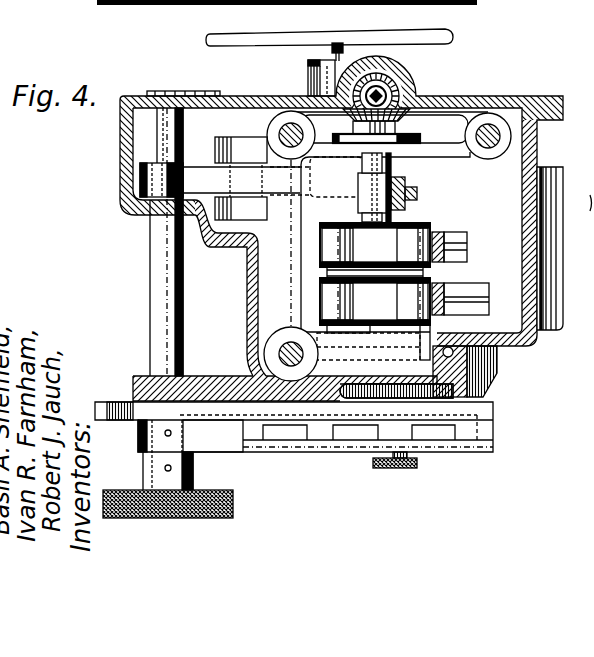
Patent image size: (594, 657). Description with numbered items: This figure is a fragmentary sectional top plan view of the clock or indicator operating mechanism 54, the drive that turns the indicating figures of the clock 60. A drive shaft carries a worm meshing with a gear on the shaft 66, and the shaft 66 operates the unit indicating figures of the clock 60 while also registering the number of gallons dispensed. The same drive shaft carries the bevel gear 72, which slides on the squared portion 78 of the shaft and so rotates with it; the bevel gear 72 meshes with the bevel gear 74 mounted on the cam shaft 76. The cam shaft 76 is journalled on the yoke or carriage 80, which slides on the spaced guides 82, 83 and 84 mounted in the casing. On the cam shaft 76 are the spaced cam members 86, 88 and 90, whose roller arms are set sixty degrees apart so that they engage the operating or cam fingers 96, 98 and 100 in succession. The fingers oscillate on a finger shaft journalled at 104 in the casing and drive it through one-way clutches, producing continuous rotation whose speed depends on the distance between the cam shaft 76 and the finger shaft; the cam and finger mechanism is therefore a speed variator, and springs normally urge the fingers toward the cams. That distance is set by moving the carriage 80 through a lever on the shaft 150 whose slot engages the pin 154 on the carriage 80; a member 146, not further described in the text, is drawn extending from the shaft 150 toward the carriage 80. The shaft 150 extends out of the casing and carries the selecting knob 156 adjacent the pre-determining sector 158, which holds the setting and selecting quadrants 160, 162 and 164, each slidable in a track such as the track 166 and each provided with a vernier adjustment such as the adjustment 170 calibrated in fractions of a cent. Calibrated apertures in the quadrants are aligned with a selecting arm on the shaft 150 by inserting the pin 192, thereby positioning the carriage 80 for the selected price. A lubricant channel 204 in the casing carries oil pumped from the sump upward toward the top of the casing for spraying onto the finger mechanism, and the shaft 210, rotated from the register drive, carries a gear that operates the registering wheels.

The clock or indicator operating mechanism 54 is at (527, 340).
The clock 60 is at (453, 42).
The shaft 66 is at (307, 70).
The bevel gear 72 is at (410, 114).
The bevel gear 74 is at (348, 116).
The cam shaft 76 is at (363, 162).
The squared portion 78 is at (404, 82).
The yoke or carriage 80 is at (470, 157).
The guide 82 is at (497, 123).
The guide 83 is at (282, 128).
The guide 84 is at (275, 352).
The cam member 86 is at (391, 168).
The cam member 88 is at (375, 250).
The cam member 90 is at (375, 305).
The operating or cam finger 96 is at (417, 192).
The operating or cam finger 98 is at (448, 236).
The operating or cam finger 100 is at (460, 298).
The journal 104 is at (210, 440).
The lever arm 146 is at (200, 178).
The shaft 150 is at (160, 310).
The pin 154 is at (215, 141).
The selecting knob 156 is at (233, 503).
The pre-determining sector 158 is at (493, 420).
The setting and selecting quadrant 160 is at (288, 432).
The setting and selecting quadrant 162 is at (350, 432).
The setting and selecting quadrant 164 is at (440, 432).
The track 166 is at (493, 447).
The vernier adjustment 170 is at (565, 248).
The pin 192 is at (397, 470).
The channel 204 is at (457, 360).
The shaft 210 is at (345, 47).